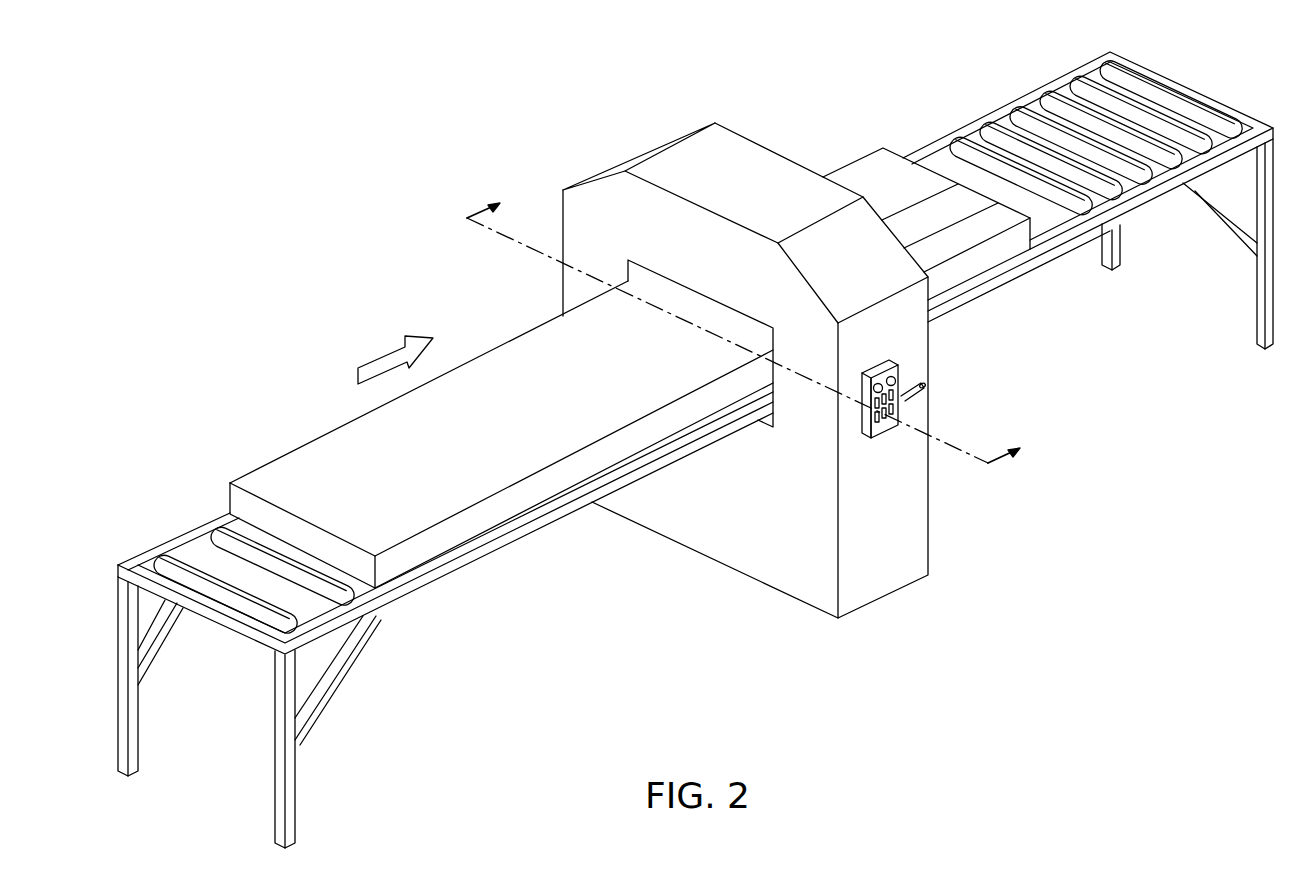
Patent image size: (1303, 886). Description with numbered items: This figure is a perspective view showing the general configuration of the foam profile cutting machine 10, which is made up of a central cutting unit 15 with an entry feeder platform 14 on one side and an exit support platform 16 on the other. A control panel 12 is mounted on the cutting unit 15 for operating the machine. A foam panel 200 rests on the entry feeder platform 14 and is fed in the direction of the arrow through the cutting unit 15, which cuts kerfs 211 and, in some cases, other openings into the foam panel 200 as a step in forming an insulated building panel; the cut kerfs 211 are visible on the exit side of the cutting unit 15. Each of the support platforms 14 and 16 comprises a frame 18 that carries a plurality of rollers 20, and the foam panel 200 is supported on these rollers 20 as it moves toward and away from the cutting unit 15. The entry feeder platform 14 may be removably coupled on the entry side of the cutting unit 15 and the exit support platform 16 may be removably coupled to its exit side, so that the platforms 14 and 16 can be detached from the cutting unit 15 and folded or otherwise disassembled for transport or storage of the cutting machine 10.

The foam profile cutting machine 10 is at (533, 88).
The cutting unit 15 is at (644, 144).
The kerfs 211 is at (885, 196).
The control panel 12 is at (887, 426).
The foam panel 200 is at (478, 527).
The entry feeder platform 14 is at (373, 603).
The exit support platform 16 is at (1062, 255).
The frame 18 is at (298, 743).
The rollers 20 is at (192, 545).